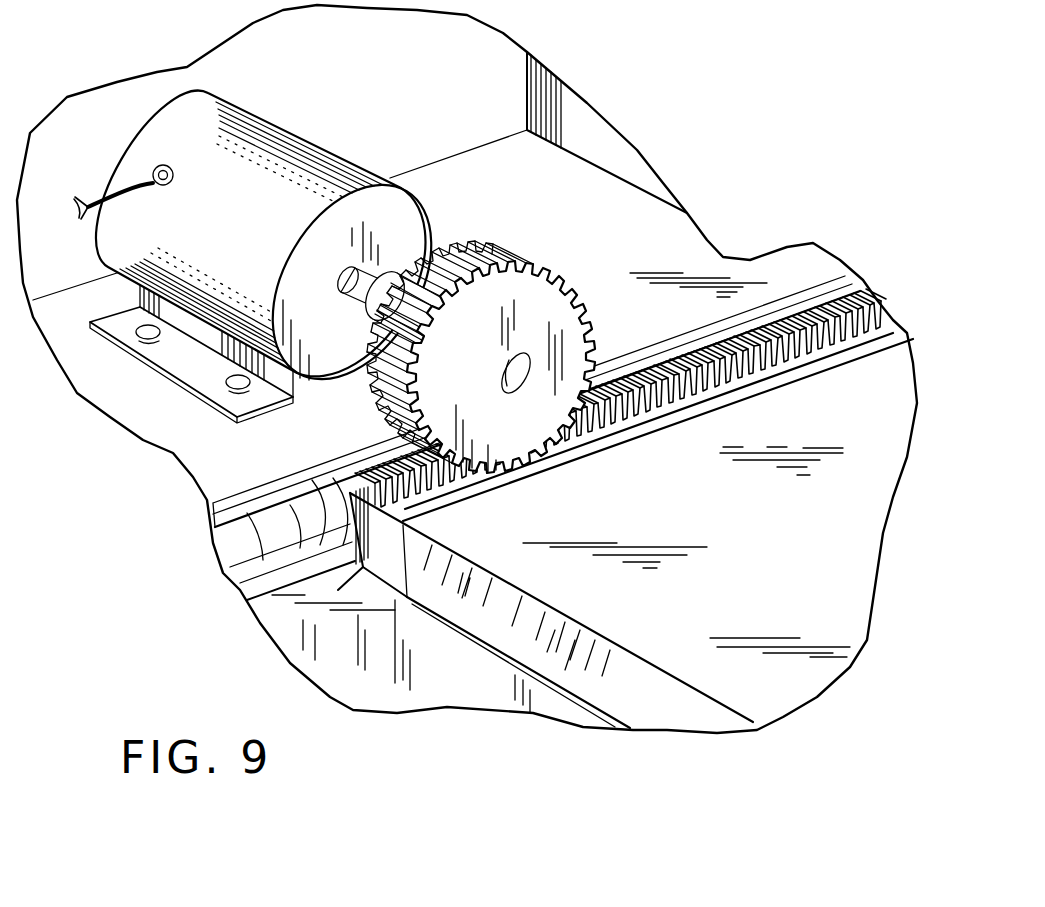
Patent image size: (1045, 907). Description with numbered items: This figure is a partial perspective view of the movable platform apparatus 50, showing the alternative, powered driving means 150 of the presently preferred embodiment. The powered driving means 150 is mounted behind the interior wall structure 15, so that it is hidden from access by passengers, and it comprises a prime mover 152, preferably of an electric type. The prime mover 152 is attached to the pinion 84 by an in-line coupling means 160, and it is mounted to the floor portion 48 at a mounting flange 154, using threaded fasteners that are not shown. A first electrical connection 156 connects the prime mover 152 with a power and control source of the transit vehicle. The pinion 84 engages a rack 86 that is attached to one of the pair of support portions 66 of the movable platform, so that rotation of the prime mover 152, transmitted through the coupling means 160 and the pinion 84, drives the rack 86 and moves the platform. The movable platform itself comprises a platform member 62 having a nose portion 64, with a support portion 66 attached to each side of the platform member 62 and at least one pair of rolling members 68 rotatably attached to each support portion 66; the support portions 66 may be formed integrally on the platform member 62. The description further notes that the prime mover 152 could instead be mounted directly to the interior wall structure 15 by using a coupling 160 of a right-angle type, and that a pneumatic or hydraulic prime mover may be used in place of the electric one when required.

The interior wall structure 15 is at (503, 90).
The floor portion 48 is at (207, 463).
The movable platform apparatus 50 is at (724, 758).
The platform member 62 is at (742, 587).
The nose portion 64 is at (603, 687).
The support portion 66 is at (217, 540).
The rolling member 68 is at (377, 450).
The pinion 84 is at (543, 267).
The rack 86 is at (823, 320).
The powered driving means 150 is at (161, 92).
The prime mover 152 is at (304, 128).
The mounting flange 154 is at (187, 387).
The first electrical connection 156 is at (100, 228).
The in-line coupling means 160 is at (430, 293).